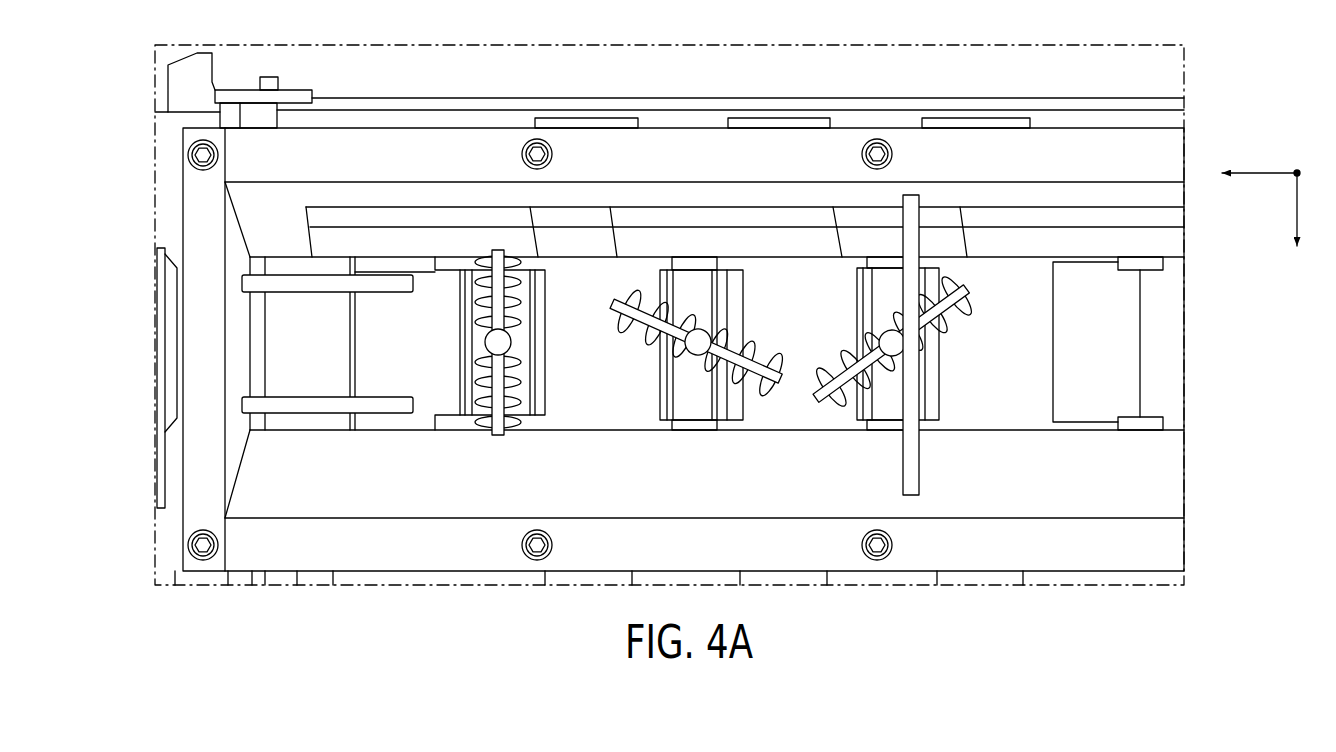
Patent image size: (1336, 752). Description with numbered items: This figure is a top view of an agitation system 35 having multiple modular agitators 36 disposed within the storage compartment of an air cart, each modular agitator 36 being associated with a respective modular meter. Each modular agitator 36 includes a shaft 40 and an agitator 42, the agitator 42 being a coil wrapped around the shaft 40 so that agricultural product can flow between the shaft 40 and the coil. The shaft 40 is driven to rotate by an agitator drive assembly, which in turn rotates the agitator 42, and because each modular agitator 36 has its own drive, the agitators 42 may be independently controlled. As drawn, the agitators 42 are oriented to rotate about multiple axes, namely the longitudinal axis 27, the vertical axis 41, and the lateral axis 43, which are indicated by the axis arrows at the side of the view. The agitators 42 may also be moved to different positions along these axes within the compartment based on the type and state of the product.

The agitation system 35 is at (121, 122).
The modular agitator 36 is at (699, 289).
The shaft 40 is at (505, 250).
The agitator 42 is at (495, 306).
The vertical axis 41 is at (1300, 173).
The lateral axis 43 is at (1263, 172).
The longitudinal axis 27 is at (1298, 205).